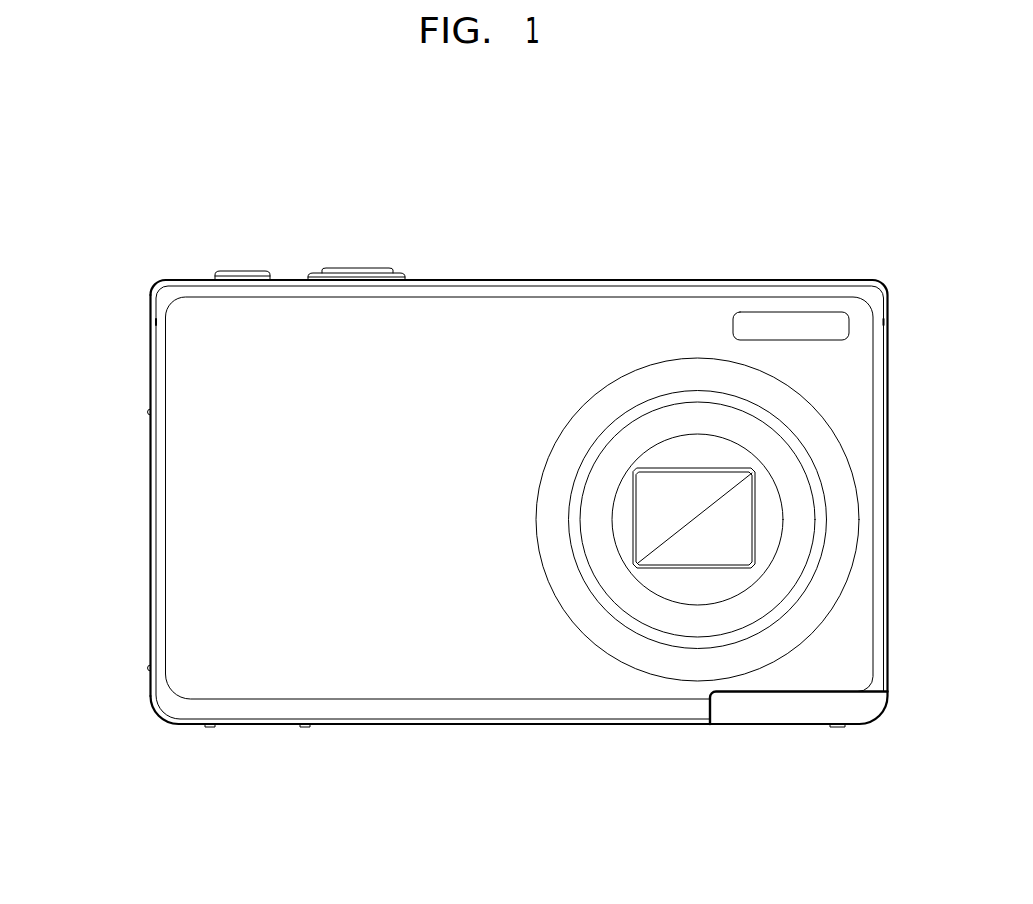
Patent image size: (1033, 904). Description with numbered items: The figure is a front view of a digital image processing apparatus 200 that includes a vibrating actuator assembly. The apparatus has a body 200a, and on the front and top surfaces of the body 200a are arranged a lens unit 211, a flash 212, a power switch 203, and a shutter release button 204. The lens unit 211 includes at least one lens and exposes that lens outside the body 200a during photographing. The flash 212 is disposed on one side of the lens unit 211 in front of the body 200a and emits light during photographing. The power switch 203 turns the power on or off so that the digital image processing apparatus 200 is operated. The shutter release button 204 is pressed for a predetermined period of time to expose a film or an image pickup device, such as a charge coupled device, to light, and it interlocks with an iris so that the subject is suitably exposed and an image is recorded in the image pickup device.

The digital image processing apparatus 200 is at (727, 177).
The body 200a is at (150, 507).
The power switch 203 is at (358, 268).
The shutter release button 204 is at (243, 270).
The lens unit 211 is at (623, 615).
The flash 212 is at (783, 323).